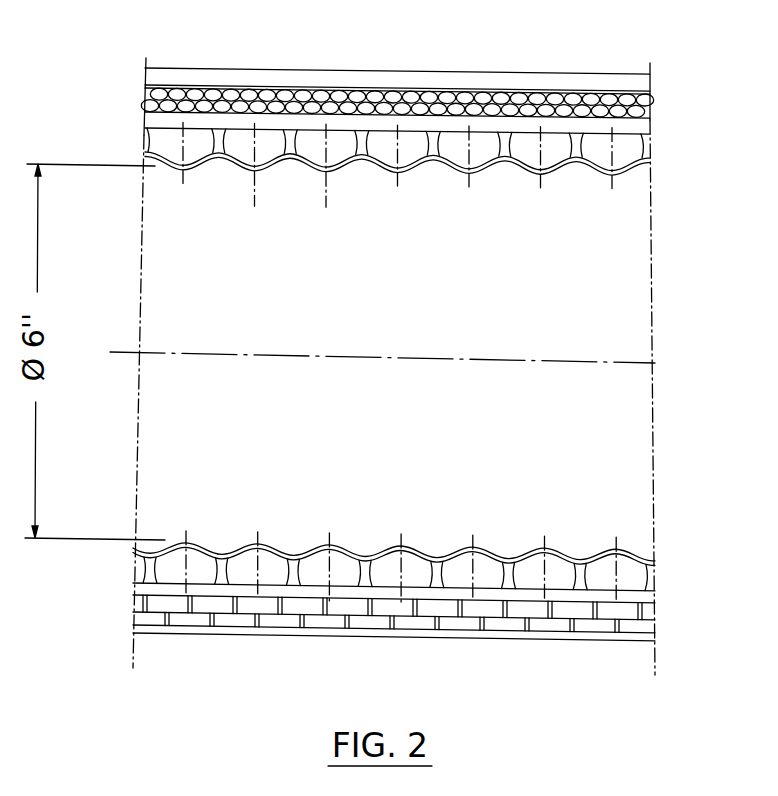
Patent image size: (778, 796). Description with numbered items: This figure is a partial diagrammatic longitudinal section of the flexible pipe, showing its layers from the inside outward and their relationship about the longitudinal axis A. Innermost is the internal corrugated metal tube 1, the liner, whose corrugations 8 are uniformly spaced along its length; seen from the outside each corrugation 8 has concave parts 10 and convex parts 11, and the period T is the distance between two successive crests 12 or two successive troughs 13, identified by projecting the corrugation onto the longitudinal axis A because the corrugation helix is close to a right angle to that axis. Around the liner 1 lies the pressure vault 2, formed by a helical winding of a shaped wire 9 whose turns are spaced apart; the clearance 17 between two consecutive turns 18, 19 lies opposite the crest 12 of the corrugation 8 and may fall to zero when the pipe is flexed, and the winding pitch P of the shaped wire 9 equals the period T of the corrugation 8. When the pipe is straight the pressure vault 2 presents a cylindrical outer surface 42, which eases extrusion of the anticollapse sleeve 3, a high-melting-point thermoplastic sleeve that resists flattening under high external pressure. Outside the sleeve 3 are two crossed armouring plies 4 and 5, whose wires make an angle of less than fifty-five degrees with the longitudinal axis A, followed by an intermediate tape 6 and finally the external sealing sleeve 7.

The internal corrugated metal tube 1 is at (638, 170).
The pressure vault 2 is at (660, 150).
The sleeve 3 is at (643, 130).
The armouring ply 4 is at (640, 103).
The armouring ply 5 is at (630, 100).
The intermediate tape 6 is at (593, 93).
The external sealing sleeve 7 is at (537, 82).
The corrugations 8 is at (219, 166).
The shaped wire 9 is at (603, 157).
The clearance 17 is at (380, 145).
The turn 18 is at (413, 155).
The turn 19 is at (462, 157).
The cylindrical outer surface 42 is at (641, 156).
The concave parts 10 is at (247, 542).
The convex parts 11 is at (380, 558).
The crest 12 is at (513, 560).
The trough 13 is at (403, 548).
The longitudinal axis A is at (463, 360).
The period T is at (264, 201).
The winding pitch P is at (337, 600).